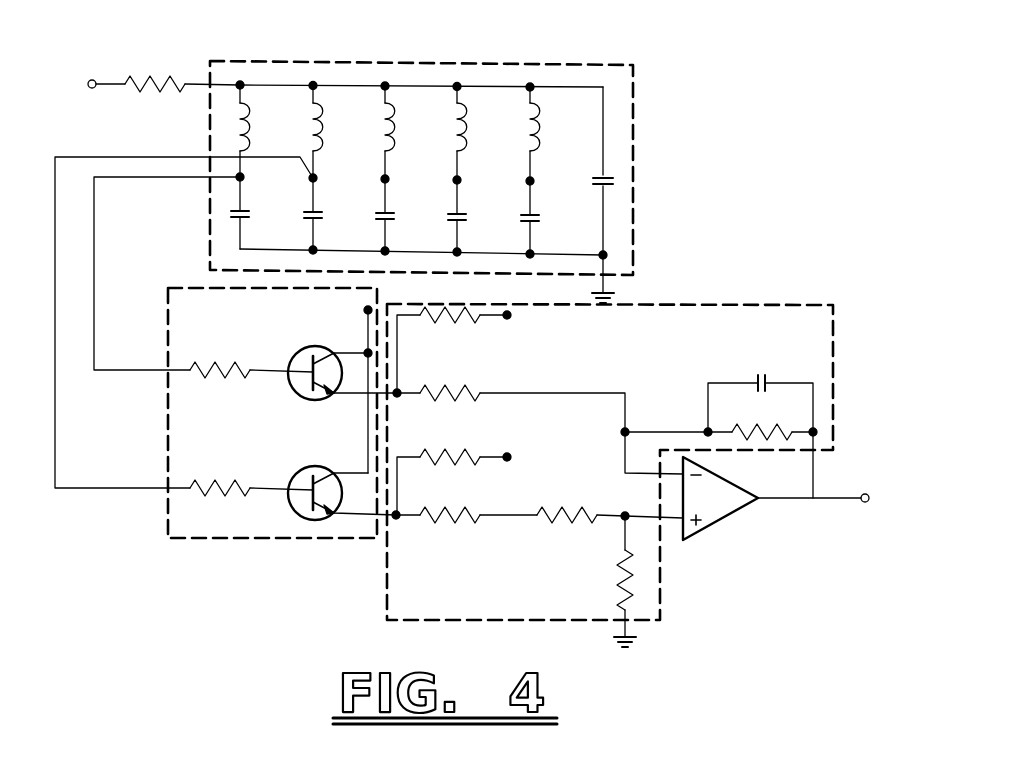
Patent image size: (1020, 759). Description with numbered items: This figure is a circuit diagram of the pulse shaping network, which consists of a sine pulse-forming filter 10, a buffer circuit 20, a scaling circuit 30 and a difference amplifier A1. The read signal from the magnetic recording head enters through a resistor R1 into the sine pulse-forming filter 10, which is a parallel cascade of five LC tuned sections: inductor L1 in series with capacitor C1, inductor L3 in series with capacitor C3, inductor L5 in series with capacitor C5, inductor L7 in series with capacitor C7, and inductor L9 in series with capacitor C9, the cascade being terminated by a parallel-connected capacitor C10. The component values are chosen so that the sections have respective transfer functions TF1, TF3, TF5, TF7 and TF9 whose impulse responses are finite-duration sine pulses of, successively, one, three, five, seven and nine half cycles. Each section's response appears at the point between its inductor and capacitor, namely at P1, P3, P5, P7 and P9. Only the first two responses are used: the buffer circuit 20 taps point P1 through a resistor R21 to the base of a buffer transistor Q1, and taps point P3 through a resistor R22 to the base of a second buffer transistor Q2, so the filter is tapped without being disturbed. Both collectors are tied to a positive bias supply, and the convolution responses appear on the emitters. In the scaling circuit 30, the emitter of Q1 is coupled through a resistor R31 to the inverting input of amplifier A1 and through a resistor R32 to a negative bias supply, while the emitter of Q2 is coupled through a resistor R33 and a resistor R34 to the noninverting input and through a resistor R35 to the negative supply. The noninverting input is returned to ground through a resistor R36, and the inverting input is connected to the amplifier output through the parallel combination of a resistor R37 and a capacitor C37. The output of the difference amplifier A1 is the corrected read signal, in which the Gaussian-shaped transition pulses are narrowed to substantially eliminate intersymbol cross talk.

The sine pulse-forming filter 10 is at (358, 63).
The buffer circuit 20 is at (168, 416).
The scaling circuit 30 is at (717, 305).
The resistor R1 is at (182, 72).
The transfer function TF1 is at (243, 83).
The transfer function TF3 is at (316, 83).
The transfer function TF5 is at (388, 83).
The tuned filter 7 node TF7 is at (461, 83).
The transfer function TF9 is at (533, 84).
The inductor L1 is at (232, 127).
The inductor L3 is at (304, 127).
The inductor L5 is at (375, 127).
The inductor L7 is at (447, 127).
The inductor L9 is at (519, 127).
The point P1 is at (243, 176).
The point P3 is at (316, 177).
The point P5 is at (388, 178).
The point P7 is at (460, 178).
The point P9 is at (533, 179).
The capacitor C1 is at (234, 213).
The capacitor C3 is at (306, 216).
The capacitor C5 is at (376, 217).
The capacitor C7 is at (449, 218).
The capacitor C9 is at (522, 219).
The capacitor C10 is at (595, 169).
The buffer transistor Q1 is at (332, 366).
The transistor Q2 is at (330, 488).
The resistor R21 is at (251, 358).
The base resistor R22 is at (251, 476).
The resistor R31 is at (540, 419).
The resistor R32 is at (476, 329).
The resistor R33 is at (466, 504).
The resistor R34 is at (610, 504).
The resistor R35 is at (465, 469).
The resistor R36 is at (601, 581).
The resistor R37 is at (721, 421).
The capacitor C37 is at (760, 391).
The difference amplifier A1 is at (733, 520).